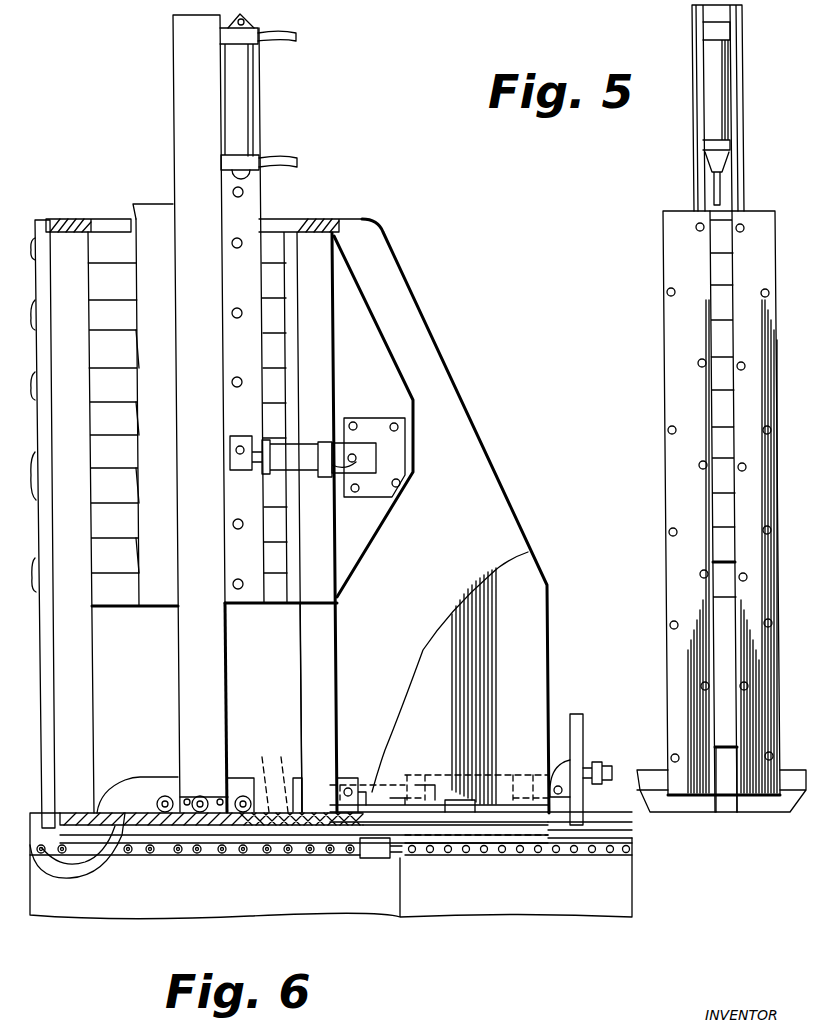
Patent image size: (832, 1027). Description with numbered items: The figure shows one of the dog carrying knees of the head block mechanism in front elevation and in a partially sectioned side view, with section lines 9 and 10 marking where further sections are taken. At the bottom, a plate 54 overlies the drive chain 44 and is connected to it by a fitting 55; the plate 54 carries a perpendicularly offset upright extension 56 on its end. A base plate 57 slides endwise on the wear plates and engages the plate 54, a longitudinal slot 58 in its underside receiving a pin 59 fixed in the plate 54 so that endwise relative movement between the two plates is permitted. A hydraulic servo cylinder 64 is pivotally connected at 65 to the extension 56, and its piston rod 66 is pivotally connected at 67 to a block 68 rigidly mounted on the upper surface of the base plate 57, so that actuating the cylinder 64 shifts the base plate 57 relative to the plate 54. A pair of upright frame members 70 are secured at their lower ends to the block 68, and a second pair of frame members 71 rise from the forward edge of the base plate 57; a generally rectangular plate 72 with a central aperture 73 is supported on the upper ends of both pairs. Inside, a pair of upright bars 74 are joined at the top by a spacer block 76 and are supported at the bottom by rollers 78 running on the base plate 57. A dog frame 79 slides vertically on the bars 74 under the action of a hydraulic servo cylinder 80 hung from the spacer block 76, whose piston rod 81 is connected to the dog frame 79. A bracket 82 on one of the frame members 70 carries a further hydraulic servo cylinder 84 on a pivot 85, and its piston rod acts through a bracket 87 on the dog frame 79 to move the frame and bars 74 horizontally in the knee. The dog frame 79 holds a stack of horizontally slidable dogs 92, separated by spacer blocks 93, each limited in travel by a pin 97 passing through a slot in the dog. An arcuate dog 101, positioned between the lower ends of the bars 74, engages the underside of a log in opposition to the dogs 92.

In FIG. 6, the section line 9- 9 is at (70, 245).
In FIG. 6, the section line 10- 10 is at (66, 278).
In FIG. 6, the drive chain 44 is at (130, 858).
In FIG. 6, the plate 54 is at (285, 856).
In FIG. 6, the fitting 55 is at (368, 859).
In FIG. 6, the upright extension 56 is at (578, 736).
In FIG. 6, the base plate 57 is at (180, 852).
In FIG. 5, the base plate 57 is at (650, 788).
In FIG. 6, the longitudinal slot 58 is at (275, 774).
In FIG. 6, the pin 59 is at (250, 780).
In FIG. 6, the hydraulic servo cylinder 64 is at (440, 775).
In FIG. 6, the pivot connection 65 is at (560, 780).
In FIG. 6, the piston rod 66 is at (374, 795).
In FIG. 6, the pivot connection 67 is at (338, 796).
In FIG. 6, the block 68 is at (346, 778).
In FIG. 6, the upright frame members 70 is at (335, 640).
In FIG. 6, the frame members 71 is at (52, 662).
In FIG. 5, the frame members 71 is at (773, 242).
In FIG. 6, the plate 72 is at (330, 228).
In FIG. 6, the aperture 73 is at (107, 219).
In FIG. 6, the upright bars 74 is at (226, 672).
In FIG. 5, the upright bars 74 is at (697, 118).
In FIG. 6, the spacer block 76 is at (255, 23).
In FIG. 6, the rollers 78 is at (202, 794).
In FIG. 6, the dog frame 79 is at (250, 222).
In FIG. 6, the hydraulic servo cylinder 80 is at (252, 88).
In FIG. 5, the hydraulic servo cylinder 80 is at (718, 118).
In FIG. 6, the piston rod 81 is at (255, 188).
In FIG. 6, the bracket 82 is at (384, 424).
In FIG. 6, the hydraulic servo cylinder 84 is at (300, 440).
In FIG. 6, the pivot 85 is at (366, 458).
In FIG. 6, the bracket 87 is at (224, 428).
In FIG. 6, the dogs 92 is at (122, 600).
In FIG. 5, the dogs 92 is at (720, 244).
In FIG. 6, the spacer blocks 93 is at (120, 293).
In FIG. 6, the pin 97 is at (241, 247).
In FIG. 6, the dog 101 is at (78, 862).
In FIG. 5, the dog 101 is at (728, 808).